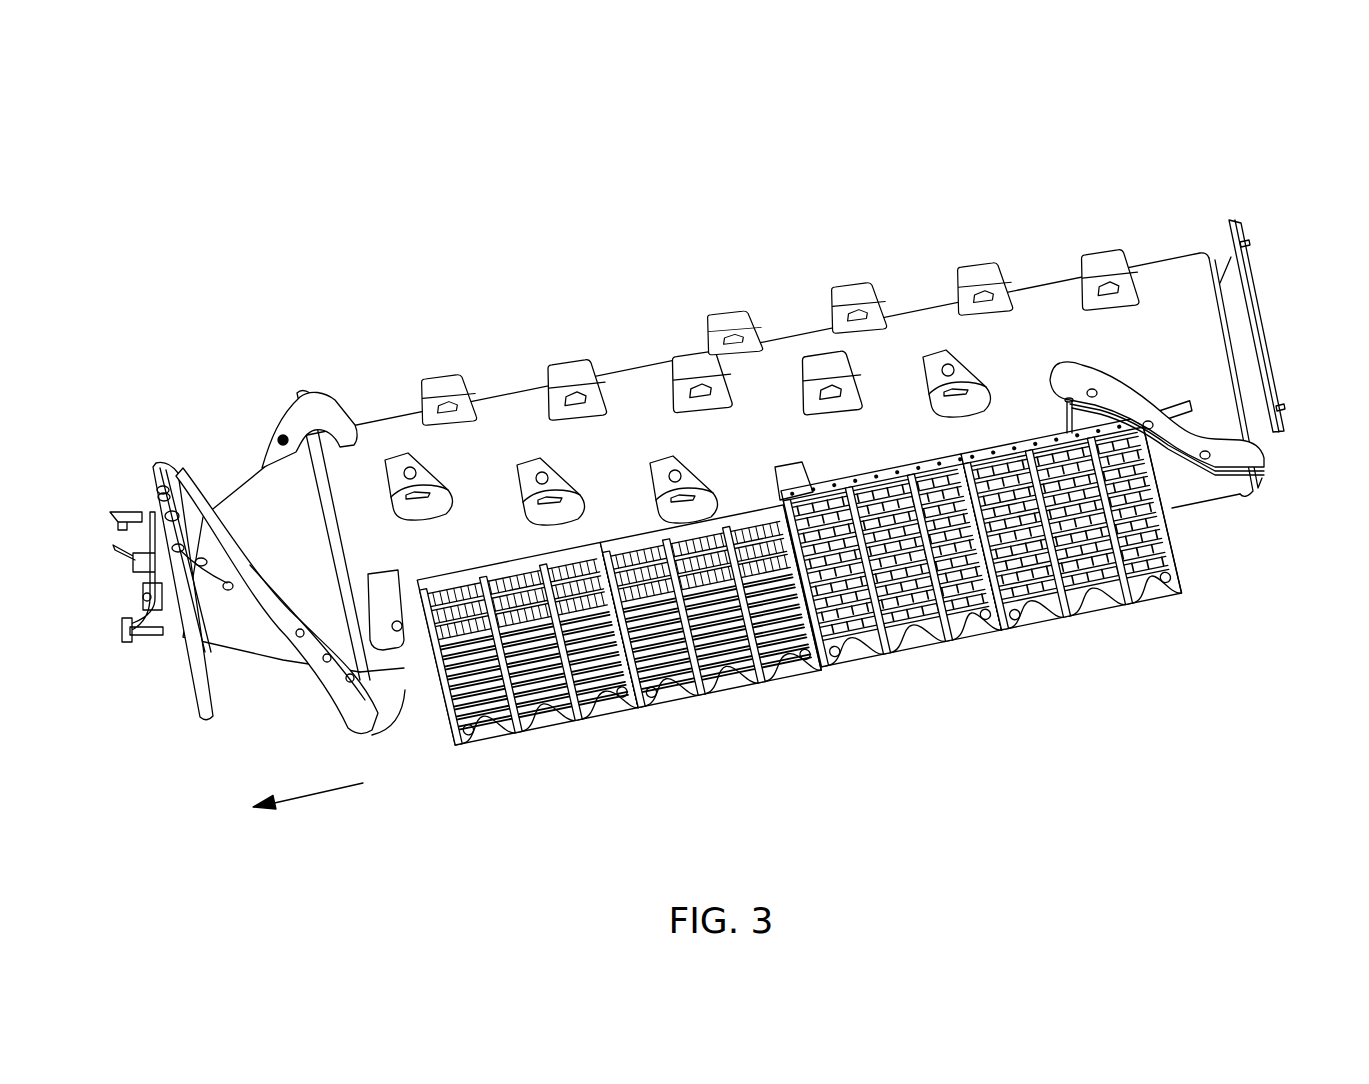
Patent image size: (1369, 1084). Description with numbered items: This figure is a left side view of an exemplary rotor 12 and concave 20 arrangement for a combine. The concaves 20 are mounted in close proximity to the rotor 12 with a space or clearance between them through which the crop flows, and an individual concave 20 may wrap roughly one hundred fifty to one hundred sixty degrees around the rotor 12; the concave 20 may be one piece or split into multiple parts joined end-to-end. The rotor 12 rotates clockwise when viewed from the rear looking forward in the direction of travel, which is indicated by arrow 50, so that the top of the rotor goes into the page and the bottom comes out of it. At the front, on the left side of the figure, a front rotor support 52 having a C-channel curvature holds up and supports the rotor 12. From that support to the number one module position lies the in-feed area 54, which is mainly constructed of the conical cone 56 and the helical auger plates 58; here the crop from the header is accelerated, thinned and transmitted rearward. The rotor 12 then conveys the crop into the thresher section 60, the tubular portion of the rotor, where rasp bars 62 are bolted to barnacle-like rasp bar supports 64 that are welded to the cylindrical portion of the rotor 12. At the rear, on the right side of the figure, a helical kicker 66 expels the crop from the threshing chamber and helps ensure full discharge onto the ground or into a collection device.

The rotor 12 is at (1187, 184).
The concave 20 is at (713, 706).
The arrow indicating direction of travel 50 is at (305, 790).
The front rotor support 52 is at (134, 505).
The in-feed area 54 is at (287, 330).
The conical cone 56 is at (224, 490).
The helical auger plates 58 is at (282, 398).
The thresher section 60 is at (305, 348).
The rasp bars 62 is at (433, 383).
The rasp bar supports 64 is at (460, 402).
The helical kicker 66 is at (1130, 400).